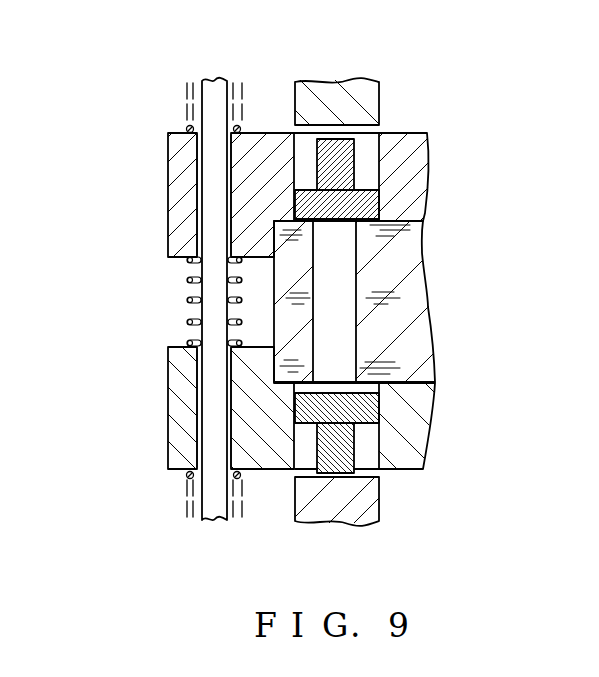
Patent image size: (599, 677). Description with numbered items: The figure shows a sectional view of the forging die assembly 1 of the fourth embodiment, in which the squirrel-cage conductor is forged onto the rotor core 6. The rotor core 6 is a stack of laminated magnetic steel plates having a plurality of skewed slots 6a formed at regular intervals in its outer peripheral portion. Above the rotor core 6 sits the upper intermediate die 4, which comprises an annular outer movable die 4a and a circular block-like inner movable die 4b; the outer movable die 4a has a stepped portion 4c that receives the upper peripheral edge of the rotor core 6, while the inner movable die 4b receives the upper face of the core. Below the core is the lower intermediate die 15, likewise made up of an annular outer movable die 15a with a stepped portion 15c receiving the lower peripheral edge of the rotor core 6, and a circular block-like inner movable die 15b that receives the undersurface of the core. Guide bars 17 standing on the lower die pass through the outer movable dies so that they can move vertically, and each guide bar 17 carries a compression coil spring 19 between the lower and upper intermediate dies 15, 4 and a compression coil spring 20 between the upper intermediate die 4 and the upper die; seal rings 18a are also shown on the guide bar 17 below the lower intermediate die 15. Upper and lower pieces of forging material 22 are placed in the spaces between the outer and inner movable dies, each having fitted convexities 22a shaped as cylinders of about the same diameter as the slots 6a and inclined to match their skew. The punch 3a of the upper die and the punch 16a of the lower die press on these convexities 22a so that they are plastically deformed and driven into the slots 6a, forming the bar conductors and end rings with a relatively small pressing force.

The forging die assembly 1 is at (155, 161).
The punch 3a is at (380, 98).
The upper intermediate die 4 is at (168, 195).
The outer movable die 4a is at (168, 215).
The inner movable die 4b is at (378, 168).
The stepped portion 4c is at (290, 240).
The rotor core 6 is at (428, 308).
The skewed slots 6a is at (357, 262).
The lower intermediate die 15 is at (168, 422).
The outer movable die 15a is at (168, 455).
The inner movable die 15b is at (375, 455).
The stepped portion 15c is at (290, 372).
The punch 16a is at (380, 505).
The guide bars 17 is at (213, 80).
The seal ring 18a is at (188, 477).
The compression coil spring 19 is at (187, 302).
The compression coil spring 20 is at (186, 129).
The forging material 22 is at (380, 205).
The fitted convexities 22a is at (333, 137).